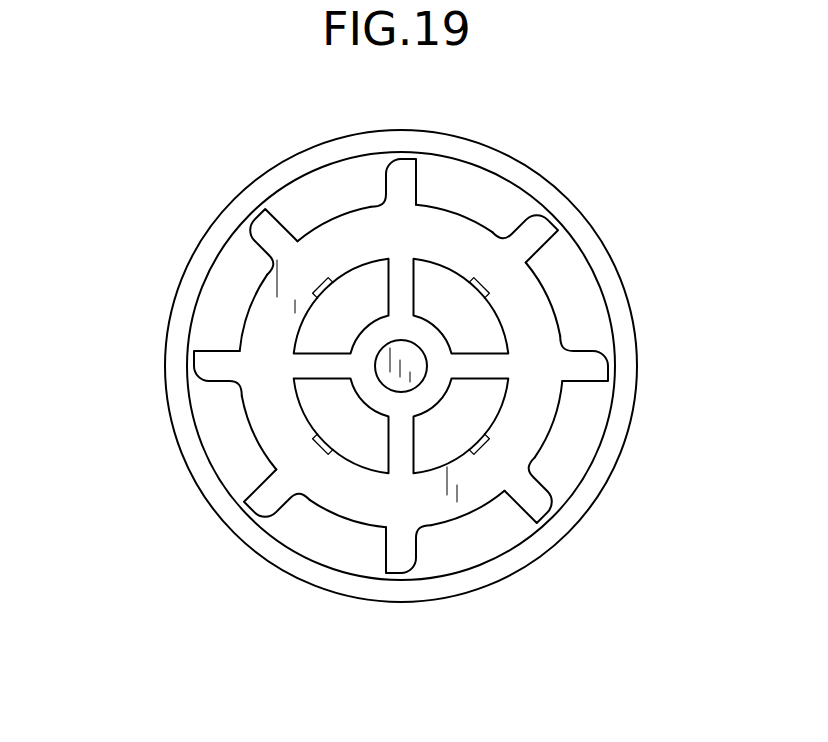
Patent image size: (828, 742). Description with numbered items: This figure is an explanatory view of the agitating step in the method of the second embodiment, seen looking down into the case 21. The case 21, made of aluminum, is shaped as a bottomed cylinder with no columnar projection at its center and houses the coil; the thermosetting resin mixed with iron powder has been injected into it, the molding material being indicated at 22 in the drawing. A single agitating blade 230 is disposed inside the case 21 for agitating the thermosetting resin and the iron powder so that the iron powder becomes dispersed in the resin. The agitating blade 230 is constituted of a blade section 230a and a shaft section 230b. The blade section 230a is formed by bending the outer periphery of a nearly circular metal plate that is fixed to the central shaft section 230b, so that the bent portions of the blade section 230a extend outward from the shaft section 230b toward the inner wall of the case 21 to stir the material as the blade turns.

The case 21 is at (335, 139).
The ring member (220,221) 22 is at (212, 438).
The agitating blade 230 is at (243, 330).
The blade section 230a is at (285, 231).
The shaft section 230b is at (410, 357).